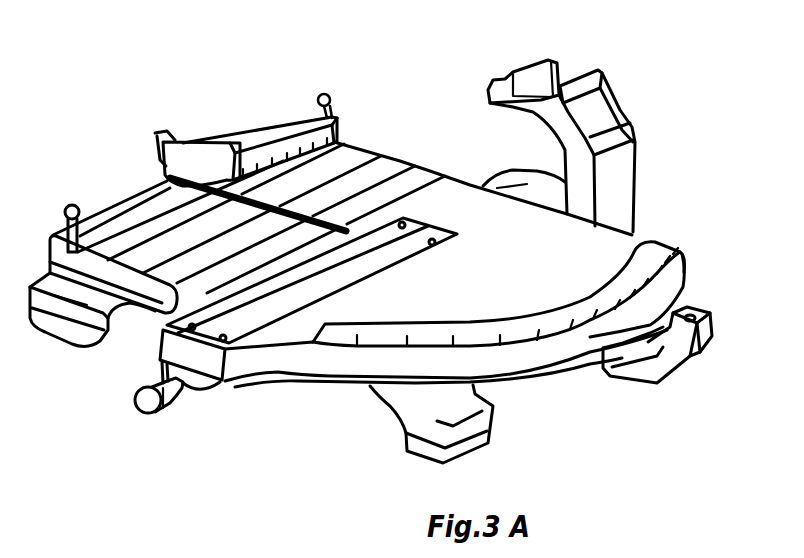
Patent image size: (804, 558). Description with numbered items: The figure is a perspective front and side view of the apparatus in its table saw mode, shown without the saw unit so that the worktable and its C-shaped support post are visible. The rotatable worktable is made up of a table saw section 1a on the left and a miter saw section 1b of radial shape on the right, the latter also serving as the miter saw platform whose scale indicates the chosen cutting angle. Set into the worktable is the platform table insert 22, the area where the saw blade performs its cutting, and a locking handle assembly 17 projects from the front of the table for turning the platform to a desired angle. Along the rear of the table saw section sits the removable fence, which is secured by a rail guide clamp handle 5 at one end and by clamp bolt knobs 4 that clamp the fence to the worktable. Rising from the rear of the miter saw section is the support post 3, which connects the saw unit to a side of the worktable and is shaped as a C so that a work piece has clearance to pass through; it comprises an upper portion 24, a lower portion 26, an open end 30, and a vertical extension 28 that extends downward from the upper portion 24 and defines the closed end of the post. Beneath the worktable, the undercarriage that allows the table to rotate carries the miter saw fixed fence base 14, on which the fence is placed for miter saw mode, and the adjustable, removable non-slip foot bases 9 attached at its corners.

The table saw section 1a is at (153, 300).
The miter saw section 1b is at (625, 260).
The support post 3 is at (636, 136).
The clamp bolt knobs 4 is at (332, 96).
The rail guide clamp handle 5 is at (160, 135).
The non-slip foot bases 9 is at (423, 452).
The miter saw fixed fence base 14 is at (650, 368).
The locking handle assembly 17 is at (152, 413).
The platform table insert 22 is at (268, 292).
The upper portion 24 is at (503, 103).
The lower portion 26 is at (482, 184).
The vertical extension 28 is at (612, 194).
The open end 30 is at (500, 145).